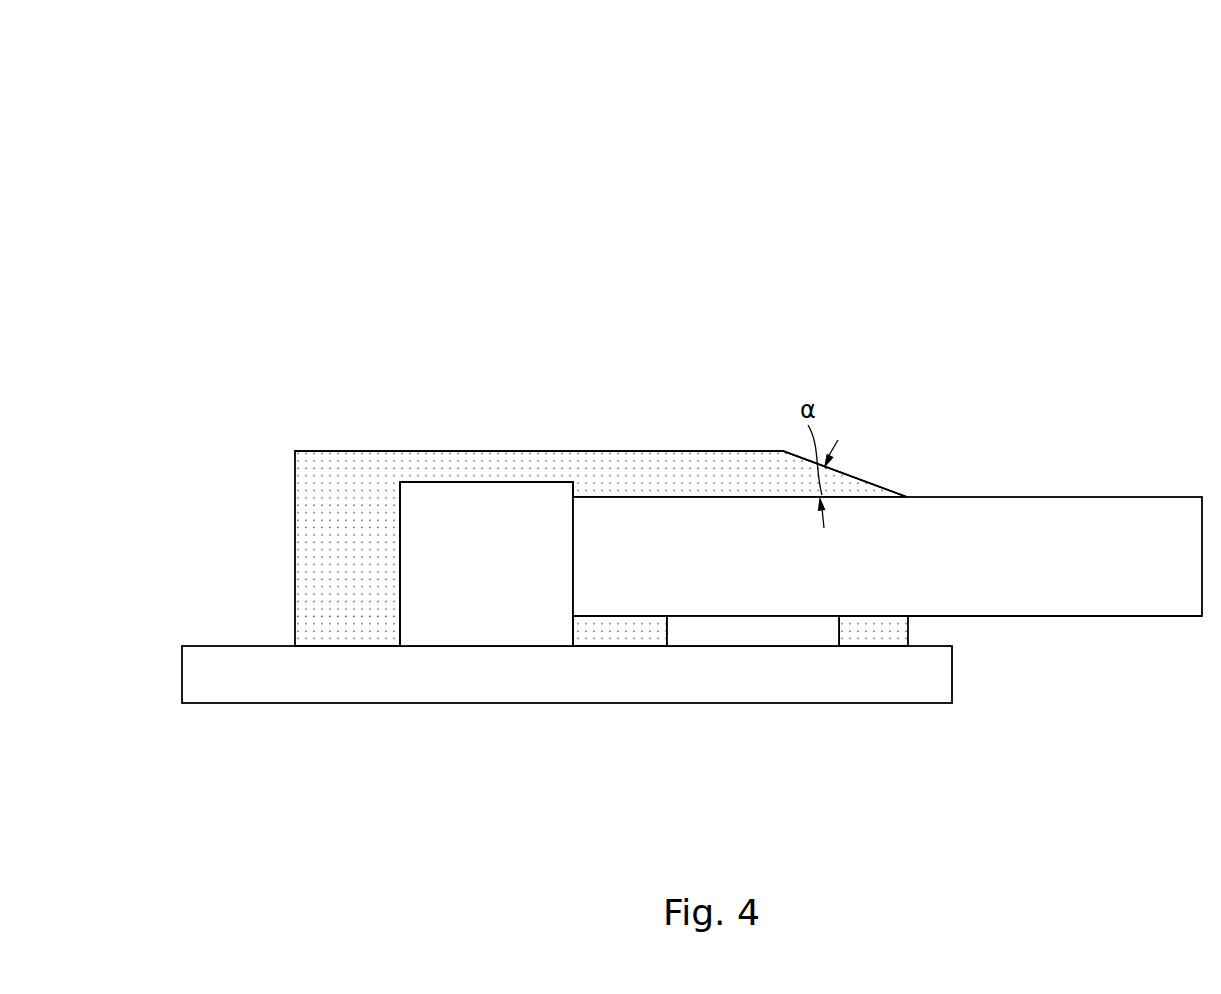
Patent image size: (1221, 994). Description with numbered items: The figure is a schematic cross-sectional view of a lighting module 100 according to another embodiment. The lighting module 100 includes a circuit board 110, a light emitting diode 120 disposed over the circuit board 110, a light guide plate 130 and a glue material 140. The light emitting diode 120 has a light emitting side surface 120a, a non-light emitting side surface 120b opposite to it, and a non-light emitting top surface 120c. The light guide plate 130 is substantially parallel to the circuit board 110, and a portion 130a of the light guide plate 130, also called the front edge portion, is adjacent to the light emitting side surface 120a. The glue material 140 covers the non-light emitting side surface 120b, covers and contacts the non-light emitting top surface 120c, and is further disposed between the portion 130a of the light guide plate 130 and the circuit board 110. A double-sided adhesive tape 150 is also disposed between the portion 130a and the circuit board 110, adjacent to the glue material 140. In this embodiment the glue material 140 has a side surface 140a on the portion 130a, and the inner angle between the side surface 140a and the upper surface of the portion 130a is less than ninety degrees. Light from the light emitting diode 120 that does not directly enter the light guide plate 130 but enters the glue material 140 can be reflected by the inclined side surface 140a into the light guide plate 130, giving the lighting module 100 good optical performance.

The lighting module 100 is at (83, 43).
The circuit board 110 is at (545, 695).
The light emitting diode 120 is at (503, 490).
The light emitting side surface 120a is at (582, 515).
The non-light emitting side surface 120b is at (391, 515).
The non-light emitting top surface 120c is at (441, 467).
The light guide plate 130 is at (1042, 502).
The portion of the light guide plate 130a is at (624, 609).
The glue material 140 is at (641, 456).
The side surface of the glue material 140a is at (861, 468).
The double-sided adhesive tape 150 is at (718, 637).